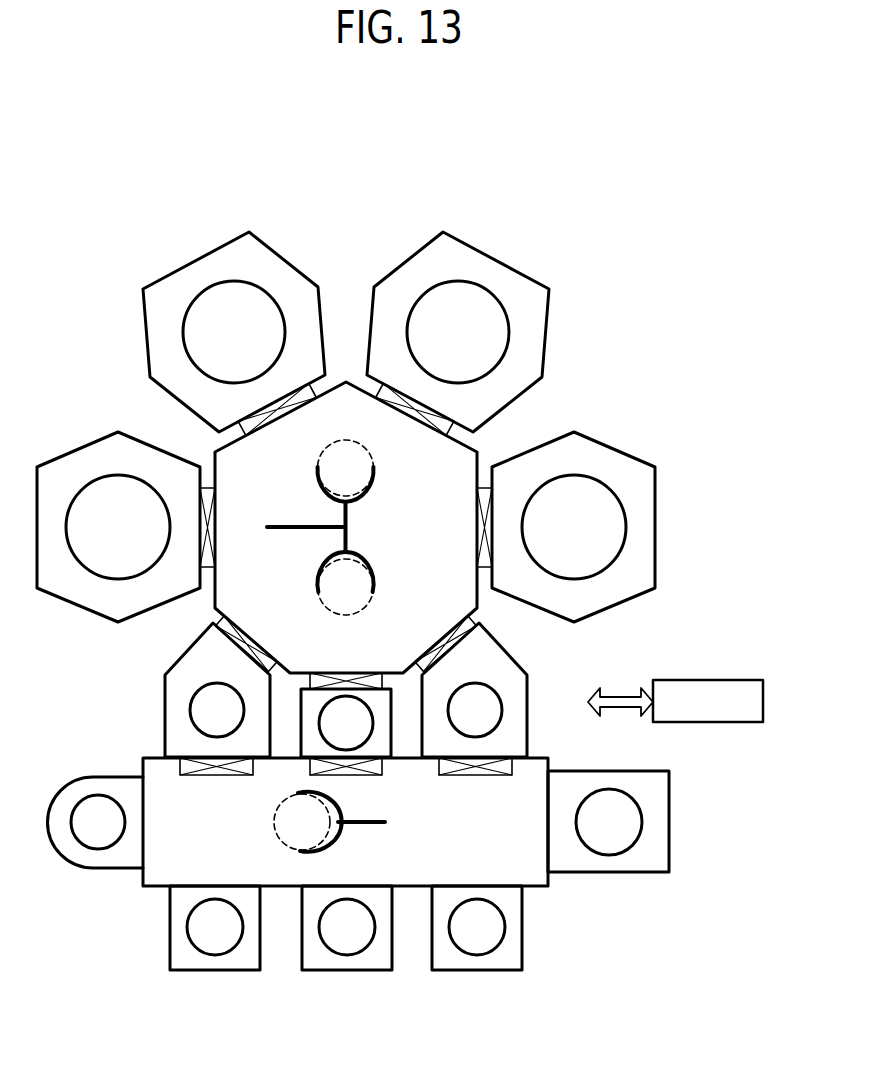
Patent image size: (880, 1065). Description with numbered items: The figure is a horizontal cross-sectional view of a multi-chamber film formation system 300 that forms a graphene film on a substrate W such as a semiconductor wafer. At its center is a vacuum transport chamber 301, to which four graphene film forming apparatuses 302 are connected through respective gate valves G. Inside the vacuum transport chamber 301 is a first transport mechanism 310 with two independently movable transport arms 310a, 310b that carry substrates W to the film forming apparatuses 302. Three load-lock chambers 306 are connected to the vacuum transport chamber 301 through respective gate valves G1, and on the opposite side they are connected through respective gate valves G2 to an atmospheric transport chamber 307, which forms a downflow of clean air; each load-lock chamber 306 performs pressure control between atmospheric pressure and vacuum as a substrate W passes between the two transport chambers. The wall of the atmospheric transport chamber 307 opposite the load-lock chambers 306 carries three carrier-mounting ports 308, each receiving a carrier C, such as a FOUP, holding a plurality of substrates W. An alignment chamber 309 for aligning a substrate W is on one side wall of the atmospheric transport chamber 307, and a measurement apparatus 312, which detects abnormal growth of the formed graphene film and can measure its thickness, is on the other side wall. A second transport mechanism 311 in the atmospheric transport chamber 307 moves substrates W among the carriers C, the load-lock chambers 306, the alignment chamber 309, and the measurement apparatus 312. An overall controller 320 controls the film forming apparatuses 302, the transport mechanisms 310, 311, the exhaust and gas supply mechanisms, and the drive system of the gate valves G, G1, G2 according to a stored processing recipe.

The film formation system 300 is at (652, 112).
The vacuum transport chamber 301 is at (347, 380).
The graphene film forming apparatus 302 is at (192, 261).
The load-lock chamber 306 is at (165, 692).
The atmospheric transport chamber 307 is at (543, 758).
The carrier-mounting port 308 is at (198, 883).
The alignment chamber 309 is at (107, 868).
The first transport mechanism 310 is at (400, 512).
The transport arm 310a is at (318, 473).
The transport arm 310b is at (372, 558).
The second transport mechanism 311 is at (368, 830).
The measurement apparatus 312 is at (632, 873).
The overall controller 320 is at (707, 680).
The gate valve G is at (236, 424).
The gate valve G1 is at (207, 618).
The gate valve G2 is at (167, 773).
The substrate W is at (372, 440).
The carrier C is at (217, 972).